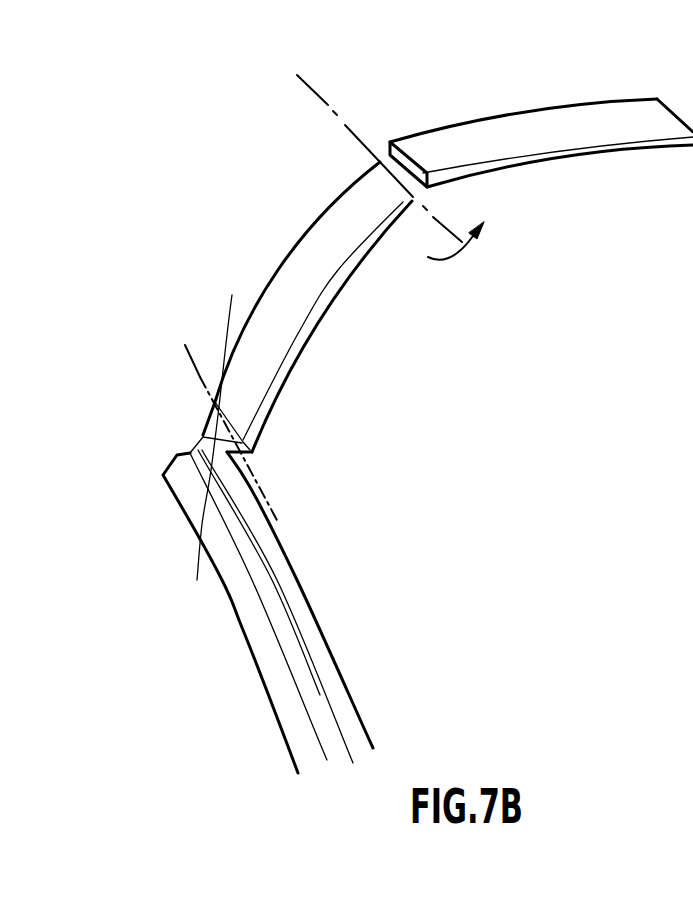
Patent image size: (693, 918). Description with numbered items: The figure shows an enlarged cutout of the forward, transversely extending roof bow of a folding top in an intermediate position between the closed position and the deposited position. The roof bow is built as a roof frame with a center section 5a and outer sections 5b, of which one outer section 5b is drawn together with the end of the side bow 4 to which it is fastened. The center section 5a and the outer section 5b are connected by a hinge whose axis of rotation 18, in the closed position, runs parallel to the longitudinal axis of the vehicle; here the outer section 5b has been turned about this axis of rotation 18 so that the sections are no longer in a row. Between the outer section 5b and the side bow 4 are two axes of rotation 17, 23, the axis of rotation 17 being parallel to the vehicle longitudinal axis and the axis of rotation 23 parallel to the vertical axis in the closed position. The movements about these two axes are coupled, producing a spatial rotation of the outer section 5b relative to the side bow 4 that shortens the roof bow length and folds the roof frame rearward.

The side bow 4 is at (243, 630).
The center section 5a is at (533, 128).
The outer section 5b is at (285, 327).
The axis of rotation 17 is at (198, 377).
The axis of rotation 18 is at (332, 102).
The axis of rotation 23 is at (227, 332).